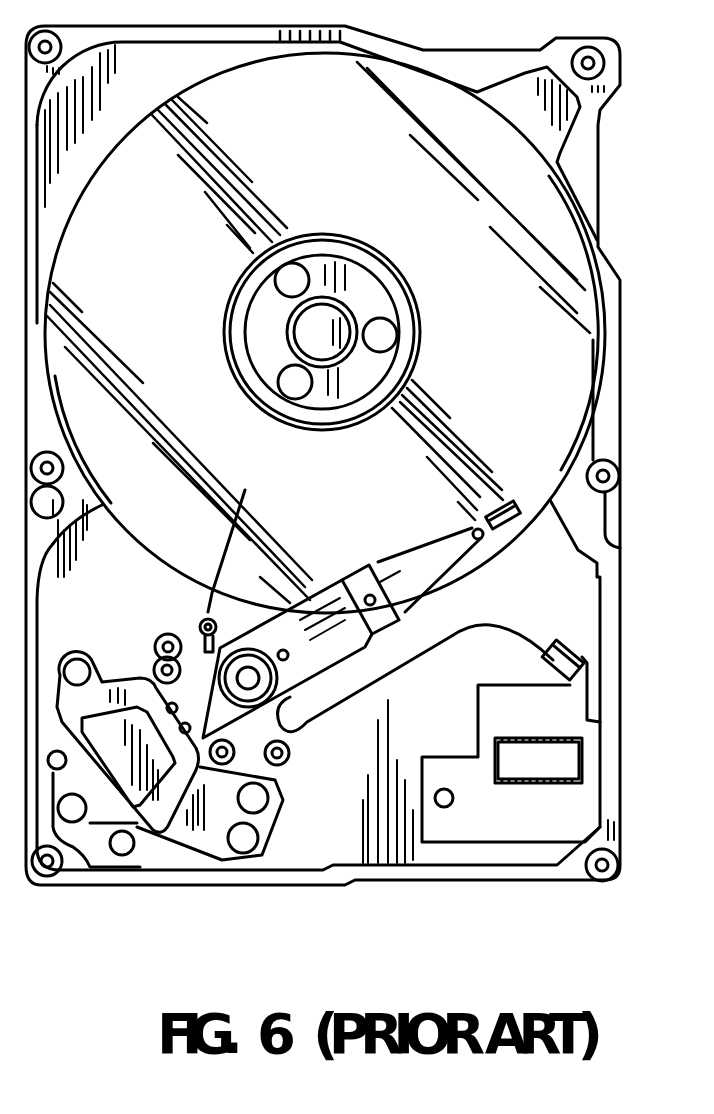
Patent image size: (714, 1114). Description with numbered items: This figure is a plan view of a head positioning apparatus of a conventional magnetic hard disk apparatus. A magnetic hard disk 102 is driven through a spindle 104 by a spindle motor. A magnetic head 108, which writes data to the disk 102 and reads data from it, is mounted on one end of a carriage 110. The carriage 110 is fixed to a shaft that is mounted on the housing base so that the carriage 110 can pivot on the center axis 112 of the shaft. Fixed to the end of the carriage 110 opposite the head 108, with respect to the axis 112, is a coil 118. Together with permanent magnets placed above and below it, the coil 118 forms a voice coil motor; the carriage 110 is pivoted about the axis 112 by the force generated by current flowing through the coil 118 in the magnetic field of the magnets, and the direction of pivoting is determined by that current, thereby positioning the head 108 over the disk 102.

The magnetic hard disk 102 is at (570, 268).
The spindle 104 is at (368, 288).
The magnetic head 108 is at (508, 493).
The carriage 110 is at (315, 613).
The center axis 112 is at (252, 680).
The coil 118 is at (138, 820).